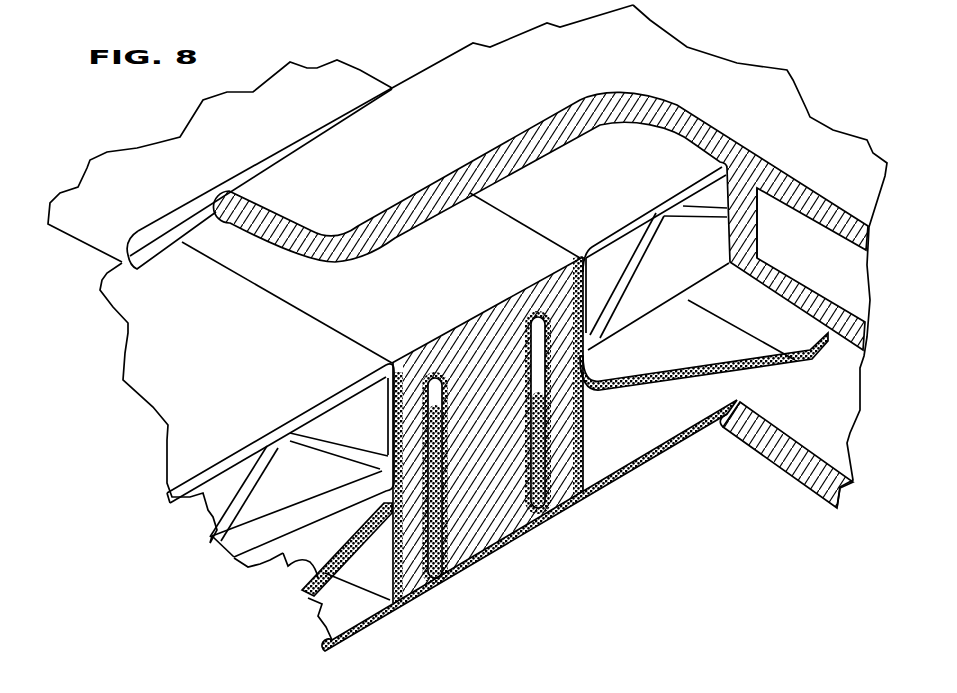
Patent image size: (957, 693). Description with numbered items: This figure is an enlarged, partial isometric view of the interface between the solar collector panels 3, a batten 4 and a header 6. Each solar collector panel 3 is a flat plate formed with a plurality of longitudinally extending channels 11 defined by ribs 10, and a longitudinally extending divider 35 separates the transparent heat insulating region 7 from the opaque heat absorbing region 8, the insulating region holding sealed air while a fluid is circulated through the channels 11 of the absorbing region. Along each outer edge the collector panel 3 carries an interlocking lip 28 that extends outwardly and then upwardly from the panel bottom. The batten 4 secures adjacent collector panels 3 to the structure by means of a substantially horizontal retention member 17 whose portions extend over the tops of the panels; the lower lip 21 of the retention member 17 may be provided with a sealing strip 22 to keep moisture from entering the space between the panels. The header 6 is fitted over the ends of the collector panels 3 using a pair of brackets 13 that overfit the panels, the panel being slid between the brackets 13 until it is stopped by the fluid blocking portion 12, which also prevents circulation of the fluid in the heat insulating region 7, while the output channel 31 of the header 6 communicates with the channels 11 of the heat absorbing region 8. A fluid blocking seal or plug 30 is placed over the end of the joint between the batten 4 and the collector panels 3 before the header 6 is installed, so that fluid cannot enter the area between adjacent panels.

The solar collector panel 3 is at (462, 214).
The batten 4 is at (340, 322).
The header 6 is at (809, 112).
The heat insulating region 7 is at (437, 408).
The heat absorbing region 8 is at (262, 571).
The rib 10 is at (333, 445).
The channel 11 is at (288, 465).
The fluid blocking portion 12 is at (762, 246).
The bracket 13 is at (720, 427).
The retention member 17 is at (160, 157).
The lower lip 21 is at (140, 248).
The sealing strip 22 is at (158, 257).
The interlocking lip 28 is at (533, 397).
The fluid blocking seal or plug 30 is at (520, 235).
The output channel 31 is at (795, 413).
The divider 35 is at (292, 533).